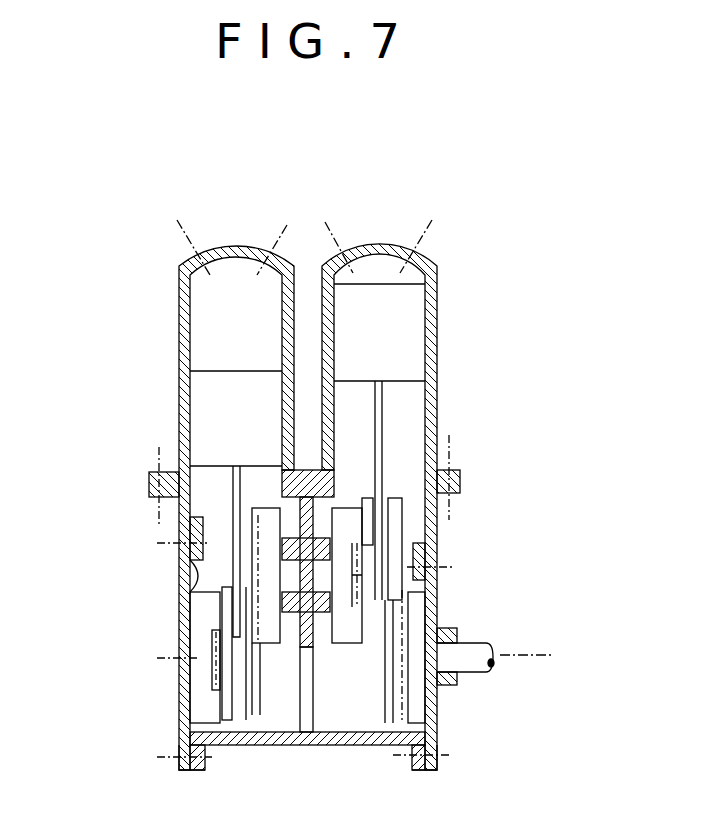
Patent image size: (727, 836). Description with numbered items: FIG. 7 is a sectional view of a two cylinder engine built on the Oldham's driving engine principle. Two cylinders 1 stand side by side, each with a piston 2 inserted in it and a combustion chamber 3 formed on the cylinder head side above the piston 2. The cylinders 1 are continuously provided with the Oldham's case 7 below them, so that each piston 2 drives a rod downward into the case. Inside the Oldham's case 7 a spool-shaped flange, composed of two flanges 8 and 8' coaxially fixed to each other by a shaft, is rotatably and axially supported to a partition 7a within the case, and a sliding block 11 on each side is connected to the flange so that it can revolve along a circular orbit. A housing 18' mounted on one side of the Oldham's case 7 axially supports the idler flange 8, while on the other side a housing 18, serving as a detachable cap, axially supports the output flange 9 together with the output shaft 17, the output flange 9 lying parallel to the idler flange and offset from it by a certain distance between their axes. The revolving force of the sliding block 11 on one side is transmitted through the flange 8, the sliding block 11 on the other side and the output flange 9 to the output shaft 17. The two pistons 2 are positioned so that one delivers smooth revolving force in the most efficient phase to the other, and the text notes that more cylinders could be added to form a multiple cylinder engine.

The cylinder 1 is at (178, 316).
The piston 2 is at (207, 382).
The combustion chamber 3 is at (228, 270).
The Oldham's case 7 is at (306, 746).
The partition 7a is at (313, 687).
The idler flange 8 is at (308, 523).
The flange 8' is at (166, 657).
The output flange 9 is at (418, 607).
The sliding block 11 is at (237, 707).
The output shaft 17 is at (493, 665).
The housing 18 is at (453, 776).
The leg 18' is at (156, 730).